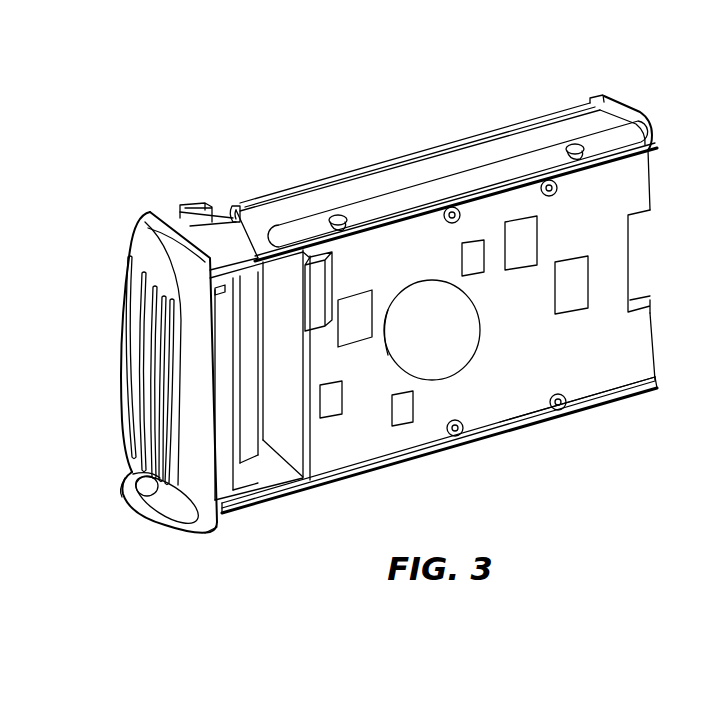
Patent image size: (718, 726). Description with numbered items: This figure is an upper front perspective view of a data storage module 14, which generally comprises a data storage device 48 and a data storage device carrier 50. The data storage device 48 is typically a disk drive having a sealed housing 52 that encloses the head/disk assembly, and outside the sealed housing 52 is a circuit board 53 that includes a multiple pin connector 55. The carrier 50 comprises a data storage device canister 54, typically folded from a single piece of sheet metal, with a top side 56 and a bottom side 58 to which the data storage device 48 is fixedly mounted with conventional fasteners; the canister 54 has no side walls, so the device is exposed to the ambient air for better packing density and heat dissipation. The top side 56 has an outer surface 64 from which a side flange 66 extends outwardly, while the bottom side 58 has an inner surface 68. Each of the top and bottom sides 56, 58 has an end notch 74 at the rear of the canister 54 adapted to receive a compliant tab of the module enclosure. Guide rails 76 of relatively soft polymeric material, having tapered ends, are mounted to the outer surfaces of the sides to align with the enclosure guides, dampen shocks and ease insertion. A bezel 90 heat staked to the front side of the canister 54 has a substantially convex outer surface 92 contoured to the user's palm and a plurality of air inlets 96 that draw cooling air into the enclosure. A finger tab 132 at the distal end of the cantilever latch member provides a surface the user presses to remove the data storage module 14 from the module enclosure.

The data storage module 14 is at (301, 136).
The data storage device 48 is at (590, 378).
The data storage device carrier 50 is at (218, 532).
The sealed housing 52 is at (283, 277).
The circuit board 53 is at (479, 312).
The data storage device canister 54 is at (318, 503).
The multiple pin connector 55 is at (640, 253).
The top side 56 is at (609, 106).
The bottom side 58 is at (625, 406).
The outer surface 64 is at (413, 170).
The side flange 66 is at (333, 172).
The inner surface 68 is at (277, 483).
The end notch 74 is at (594, 104).
The guide rail 76 is at (650, 150).
The bezel 90 is at (110, 505).
The convex outer surface 92 is at (160, 257).
The air inlets 96 is at (135, 323).
The finger tab 132 is at (150, 492).